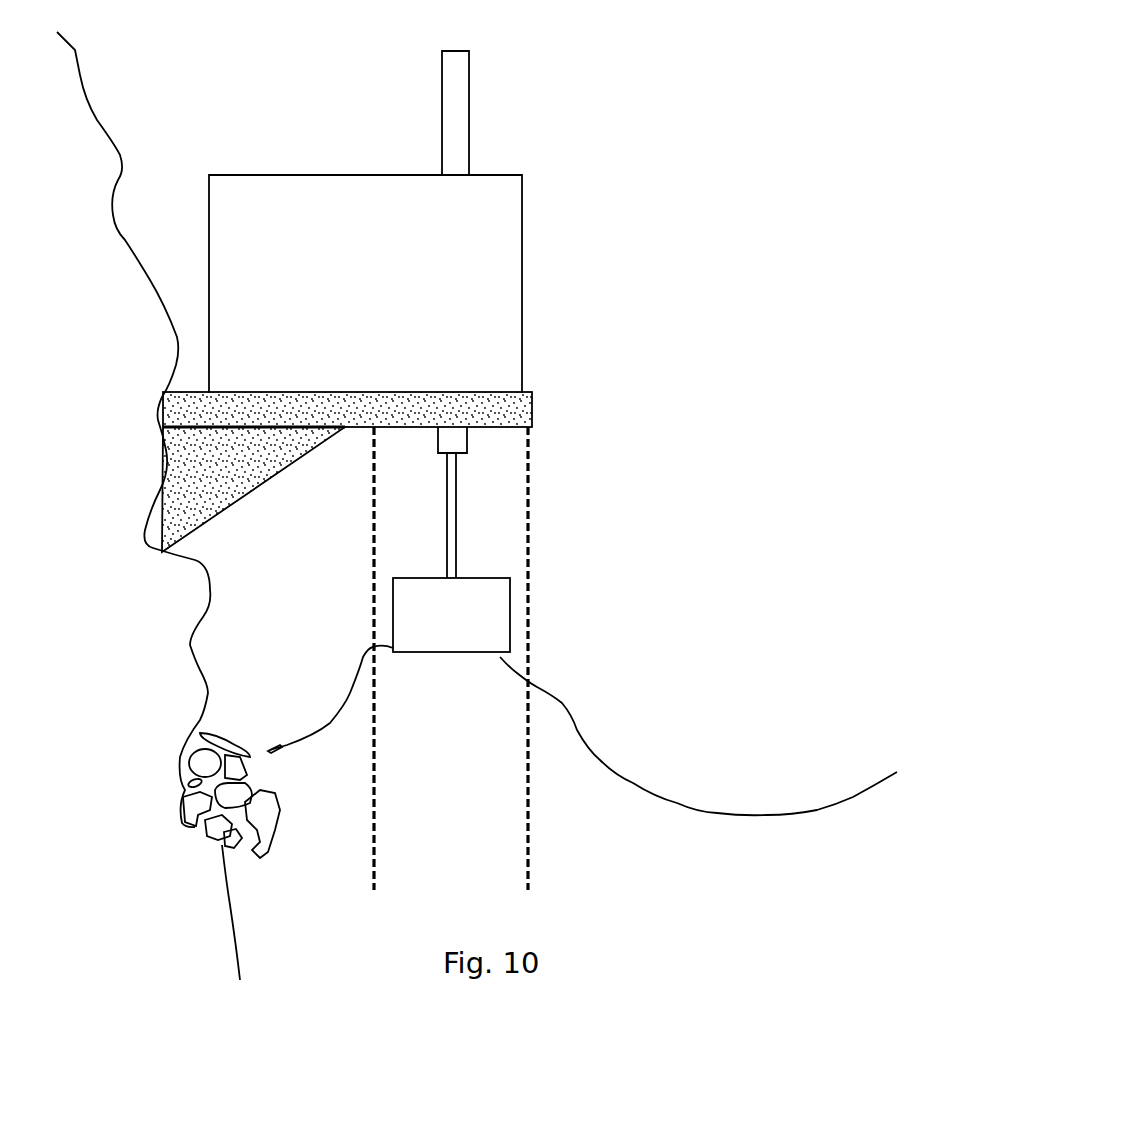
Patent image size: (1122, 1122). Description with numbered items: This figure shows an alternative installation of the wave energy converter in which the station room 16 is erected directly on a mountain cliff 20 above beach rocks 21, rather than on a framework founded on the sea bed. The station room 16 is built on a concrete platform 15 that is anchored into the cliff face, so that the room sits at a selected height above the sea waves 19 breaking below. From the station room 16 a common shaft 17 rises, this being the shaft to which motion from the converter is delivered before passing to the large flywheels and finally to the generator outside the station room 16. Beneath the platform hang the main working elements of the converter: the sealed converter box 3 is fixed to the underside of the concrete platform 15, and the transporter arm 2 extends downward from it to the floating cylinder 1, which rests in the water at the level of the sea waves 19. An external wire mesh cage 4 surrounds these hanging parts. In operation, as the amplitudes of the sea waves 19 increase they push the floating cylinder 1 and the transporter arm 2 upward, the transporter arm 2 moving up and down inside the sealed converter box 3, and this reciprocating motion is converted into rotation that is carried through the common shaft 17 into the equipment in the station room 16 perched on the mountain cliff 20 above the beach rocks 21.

The floating cylinder 1 is at (410, 603).
The transporter arm 2 is at (456, 538).
The sealed converter box 3 is at (456, 443).
The external wire mesh cage 4 is at (374, 508).
The concrete platform 15 is at (270, 445).
The station room 16 is at (457, 222).
The common shaft 17 is at (460, 92).
The sea waves 19 is at (565, 703).
The mountain cliff 20 is at (93, 175).
The beach rocks 21 is at (262, 813).